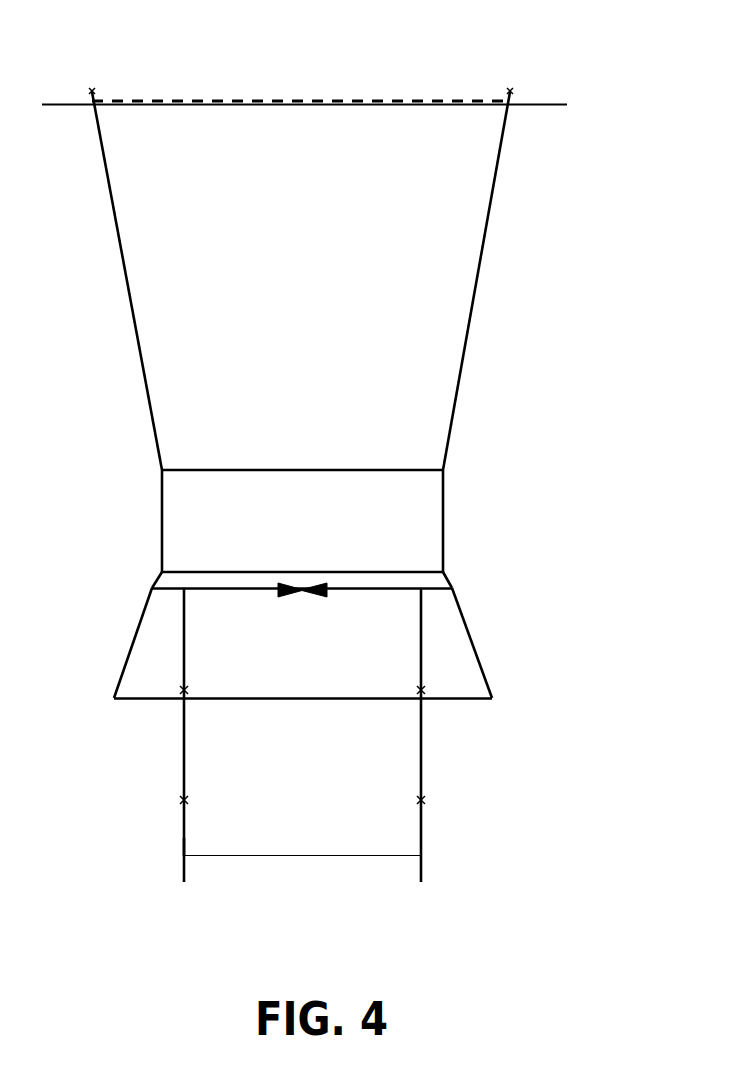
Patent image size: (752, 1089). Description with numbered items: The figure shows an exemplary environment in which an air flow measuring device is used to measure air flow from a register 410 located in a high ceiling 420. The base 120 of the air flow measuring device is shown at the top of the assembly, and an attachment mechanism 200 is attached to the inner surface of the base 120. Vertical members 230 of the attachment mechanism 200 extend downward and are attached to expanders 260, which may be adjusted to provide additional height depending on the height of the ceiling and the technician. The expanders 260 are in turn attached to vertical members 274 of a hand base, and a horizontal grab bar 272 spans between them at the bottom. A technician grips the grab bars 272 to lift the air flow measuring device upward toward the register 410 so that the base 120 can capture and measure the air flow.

The register 410 is at (252, 101).
The high ceiling 420 is at (552, 101).
The base 120 is at (125, 662).
The attachment mechanism 200 is at (358, 595).
The vertical members 230 is at (185, 613).
The expanders 260 is at (182, 775).
The grab bars 272 is at (286, 855).
The vertical members 274 is at (182, 845).